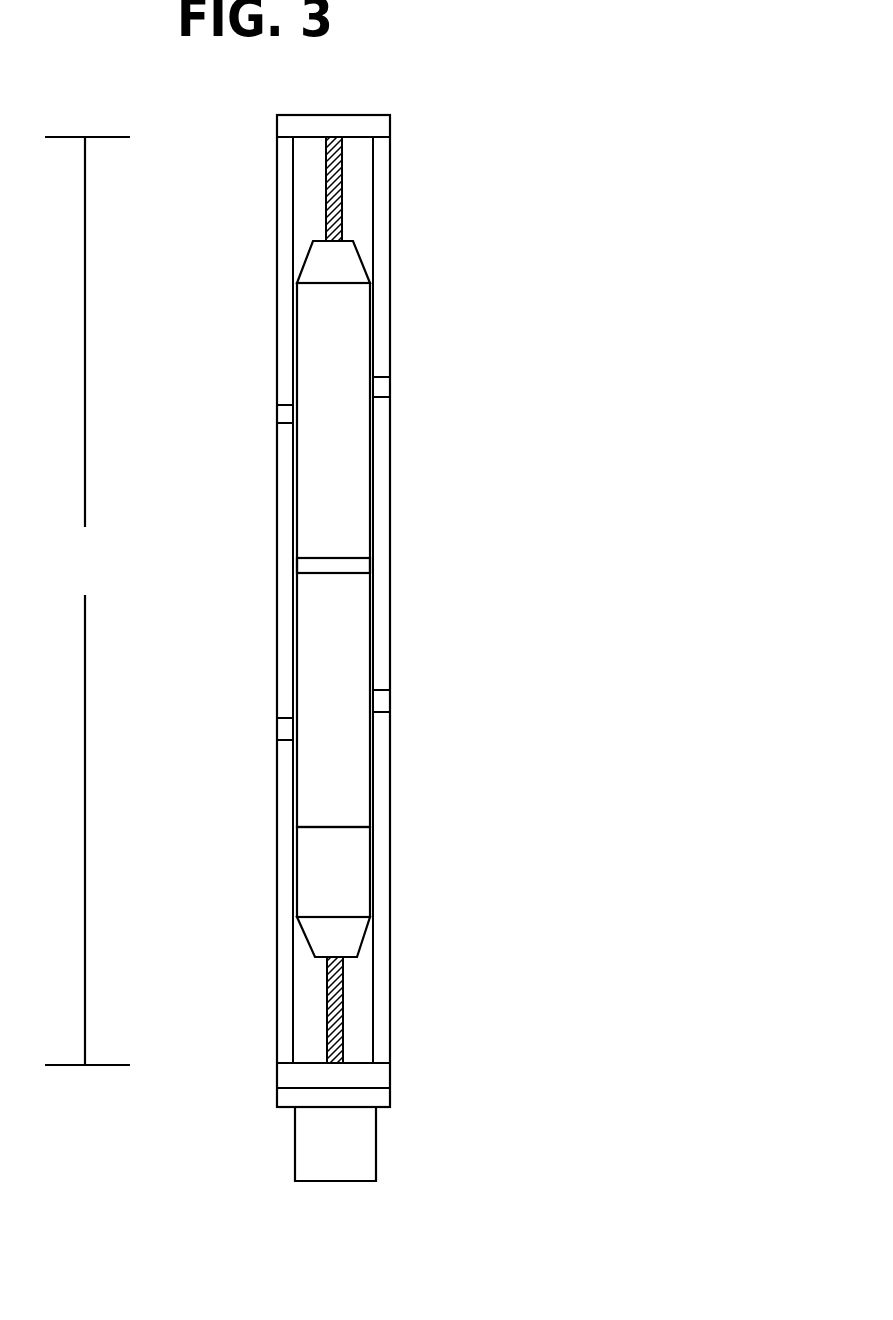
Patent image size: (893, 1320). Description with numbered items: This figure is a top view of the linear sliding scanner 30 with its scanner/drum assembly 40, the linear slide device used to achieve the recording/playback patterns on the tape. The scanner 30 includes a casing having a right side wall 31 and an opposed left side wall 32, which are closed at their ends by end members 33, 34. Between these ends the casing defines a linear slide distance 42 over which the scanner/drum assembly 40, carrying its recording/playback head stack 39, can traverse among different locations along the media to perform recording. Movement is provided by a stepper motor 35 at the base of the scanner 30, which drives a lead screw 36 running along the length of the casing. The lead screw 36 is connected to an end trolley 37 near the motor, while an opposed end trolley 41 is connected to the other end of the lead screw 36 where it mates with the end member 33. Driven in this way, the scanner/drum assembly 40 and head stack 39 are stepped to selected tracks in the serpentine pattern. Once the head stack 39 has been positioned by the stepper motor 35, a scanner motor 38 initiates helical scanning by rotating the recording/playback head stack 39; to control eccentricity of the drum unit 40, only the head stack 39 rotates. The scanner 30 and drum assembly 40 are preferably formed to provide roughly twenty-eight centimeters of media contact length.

The linear sliding scanner 30 is at (437, 106).
The right side wall 31 is at (380, 757).
The left side wall 32 is at (288, 790).
The end member 33 is at (283, 126).
The end member 34 is at (290, 1075).
The stepper motor 35 is at (334, 1160).
The lead screw 36 is at (345, 1003).
The end trolley 37 is at (360, 932).
The scanner motor 38 is at (360, 862).
The recording/playback head stack 39 is at (360, 555).
The scanner/drum assembly 40 is at (407, 273).
The opposed end trolley 41 is at (348, 268).
The linear slide distance 42 is at (87, 601).